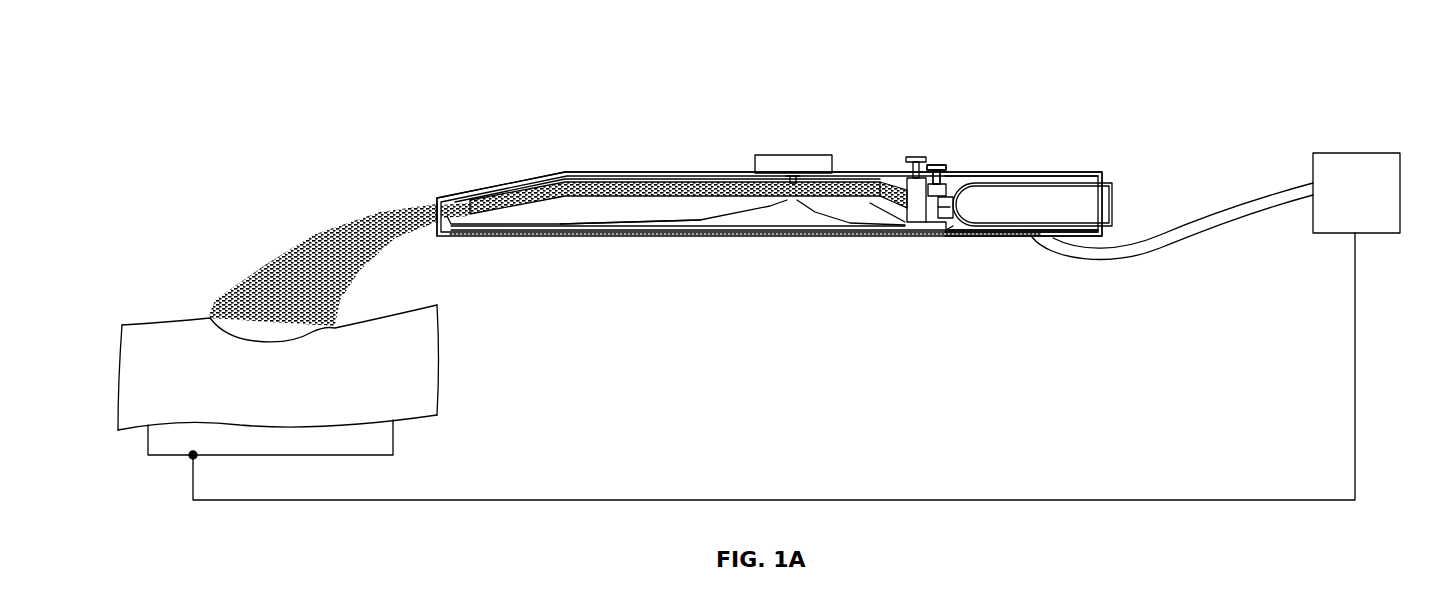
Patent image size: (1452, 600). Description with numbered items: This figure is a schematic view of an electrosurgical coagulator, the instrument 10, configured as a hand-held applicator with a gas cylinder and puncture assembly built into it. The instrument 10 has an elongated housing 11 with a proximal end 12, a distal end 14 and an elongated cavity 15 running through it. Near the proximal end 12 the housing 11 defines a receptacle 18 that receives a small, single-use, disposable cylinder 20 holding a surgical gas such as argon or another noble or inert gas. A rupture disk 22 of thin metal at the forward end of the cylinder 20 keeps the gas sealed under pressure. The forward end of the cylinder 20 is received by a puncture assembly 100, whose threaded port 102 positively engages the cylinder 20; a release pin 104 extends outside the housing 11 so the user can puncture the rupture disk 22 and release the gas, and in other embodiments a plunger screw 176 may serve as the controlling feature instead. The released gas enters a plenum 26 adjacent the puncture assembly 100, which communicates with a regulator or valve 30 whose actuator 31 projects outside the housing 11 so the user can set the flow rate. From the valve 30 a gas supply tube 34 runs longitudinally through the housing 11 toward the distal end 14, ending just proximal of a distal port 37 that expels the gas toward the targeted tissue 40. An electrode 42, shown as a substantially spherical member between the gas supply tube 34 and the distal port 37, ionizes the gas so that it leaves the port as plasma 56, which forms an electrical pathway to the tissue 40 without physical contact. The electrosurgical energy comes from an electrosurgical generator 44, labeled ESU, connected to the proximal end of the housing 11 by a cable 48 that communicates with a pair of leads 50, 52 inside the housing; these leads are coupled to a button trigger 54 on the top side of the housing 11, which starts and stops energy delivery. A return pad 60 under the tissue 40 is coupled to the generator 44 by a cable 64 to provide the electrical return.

The instrument 10 is at (550, 70).
The elongated housing 11 is at (690, 172).
The proximal end 12 is at (1045, 172).
The distal end 14 is at (457, 197).
The elongated cavity 15 is at (747, 170).
The receptacle 18 is at (993, 172).
The cylinder 20 is at (1108, 181).
The rupture disk seal 22 is at (965, 240).
The plenum 26 is at (900, 183).
The regulator or valve 30 is at (907, 180).
The actuator 31 is at (912, 156).
The gas supply tube 34 is at (597, 178).
The distal port 37 is at (422, 204).
The tissue 40 is at (282, 391).
The electrode 42 is at (439, 222).
The electrosurgical generator 44 is at (1362, 153).
The cable 48 is at (1212, 224).
The lead 50 is at (860, 237).
The lead 52 is at (640, 222).
The button trigger 54 is at (768, 155).
The plasma 56 is at (312, 247).
The return pad 60 is at (386, 437).
The cable 64 is at (783, 500).
The puncture assembly 100 is at (930, 228).
The threaded port 102 is at (945, 231).
The release pin 104 is at (940, 163).
The plunger screw 176 is at (936, 174).